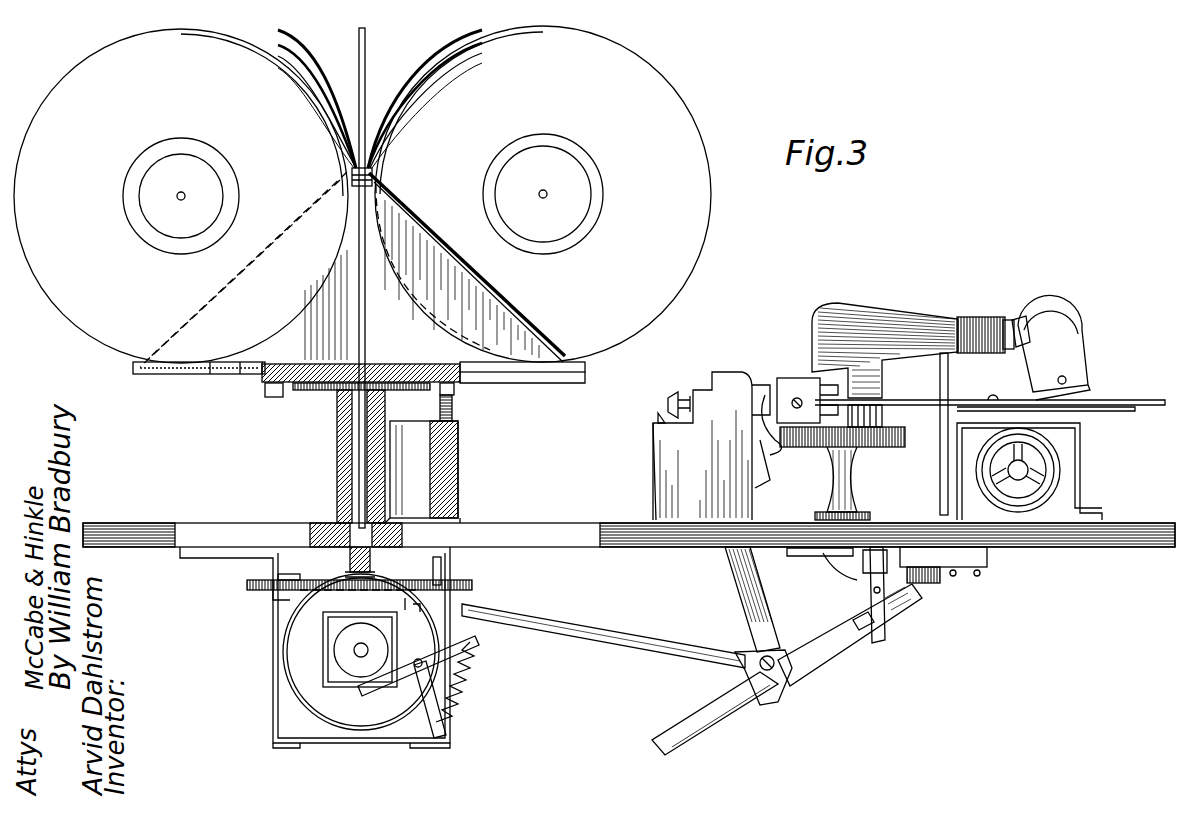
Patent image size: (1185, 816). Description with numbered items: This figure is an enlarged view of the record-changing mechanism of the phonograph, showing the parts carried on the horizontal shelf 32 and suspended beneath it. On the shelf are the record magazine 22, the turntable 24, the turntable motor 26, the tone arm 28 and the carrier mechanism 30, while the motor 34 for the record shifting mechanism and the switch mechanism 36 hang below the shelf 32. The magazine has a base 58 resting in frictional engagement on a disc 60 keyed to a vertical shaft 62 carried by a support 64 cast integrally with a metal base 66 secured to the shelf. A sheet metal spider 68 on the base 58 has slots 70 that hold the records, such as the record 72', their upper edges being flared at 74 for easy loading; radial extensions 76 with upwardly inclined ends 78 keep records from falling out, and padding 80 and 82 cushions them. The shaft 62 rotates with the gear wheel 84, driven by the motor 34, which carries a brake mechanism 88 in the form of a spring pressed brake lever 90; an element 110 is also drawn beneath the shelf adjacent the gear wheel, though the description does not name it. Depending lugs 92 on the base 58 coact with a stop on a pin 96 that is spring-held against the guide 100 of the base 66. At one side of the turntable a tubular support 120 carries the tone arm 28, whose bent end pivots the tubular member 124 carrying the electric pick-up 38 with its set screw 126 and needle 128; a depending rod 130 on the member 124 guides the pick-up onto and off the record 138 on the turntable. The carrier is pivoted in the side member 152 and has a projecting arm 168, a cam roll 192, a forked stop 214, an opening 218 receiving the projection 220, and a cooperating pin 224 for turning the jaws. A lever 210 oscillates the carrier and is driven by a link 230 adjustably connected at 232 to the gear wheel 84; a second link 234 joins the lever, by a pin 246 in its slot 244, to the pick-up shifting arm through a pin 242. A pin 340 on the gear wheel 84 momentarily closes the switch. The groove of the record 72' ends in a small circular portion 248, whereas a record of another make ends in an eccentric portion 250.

The record magazine 22 is at (250, 375).
The turntable 24 is at (1100, 412).
The turntable motor 26 is at (1062, 487).
The tone arm 28 is at (897, 310).
The carrier mechanism 30 is at (652, 444).
The horizontal shelf 32 is at (142, 523).
The motor 34 is at (290, 650).
The switch mechanism 36 is at (972, 590).
The electric pick-up 38 is at (1068, 335).
The magazine base 58 is at (275, 382).
The disc 60 is at (345, 392).
The vertical shaft 62 is at (345, 465).
The support 64 is at (345, 495).
The metal base 66 is at (552, 522).
The sheet metal spider 68 is at (505, 374).
The slots 70 is at (335, 300).
The record 72' is at (181, 196).
The flared upper edges 74 is at (575, 345).
The radial extensions 76 is at (175, 374).
The upwardly inclined ends 78 is at (133, 368).
The padding 80 is at (215, 375).
The padding 82 is at (352, 178).
The gear wheel 84 is at (247, 585).
The brake mechanism 88 is at (446, 718).
The spring pressed brake lever 90 is at (470, 660).
The depending lugs 92 is at (275, 397).
The pin 96 is at (452, 410).
The guide 100 is at (455, 470).
The pin 110 is at (273, 590).
The tubular support 120 is at (858, 490).
The tubular member 124 is at (1020, 315).
The set screw 126 is at (1070, 378).
The needle 128 is at (1090, 398).
The depending rod 130 is at (978, 318).
The record 138 is at (1105, 403).
The side member 152 is at (668, 478).
The projecting arm 168 is at (786, 378).
The cam roll 192 is at (672, 400).
The lever 210 is at (747, 597).
The forked stop 214 is at (762, 480).
The opening 218 is at (772, 445).
The projection 220 is at (656, 418).
The cooperating pin 224 is at (752, 378).
The link 230 is at (630, 638).
The adjustable connection 232 is at (480, 605).
The second link 234 is at (810, 650).
The pin 242 is at (920, 572).
The slot 244 is at (710, 712).
The pin 246 is at (780, 695).
The circular portion 248 is at (150, 170).
The eccentric portion 250 is at (600, 185).
The pin 340 is at (445, 572).